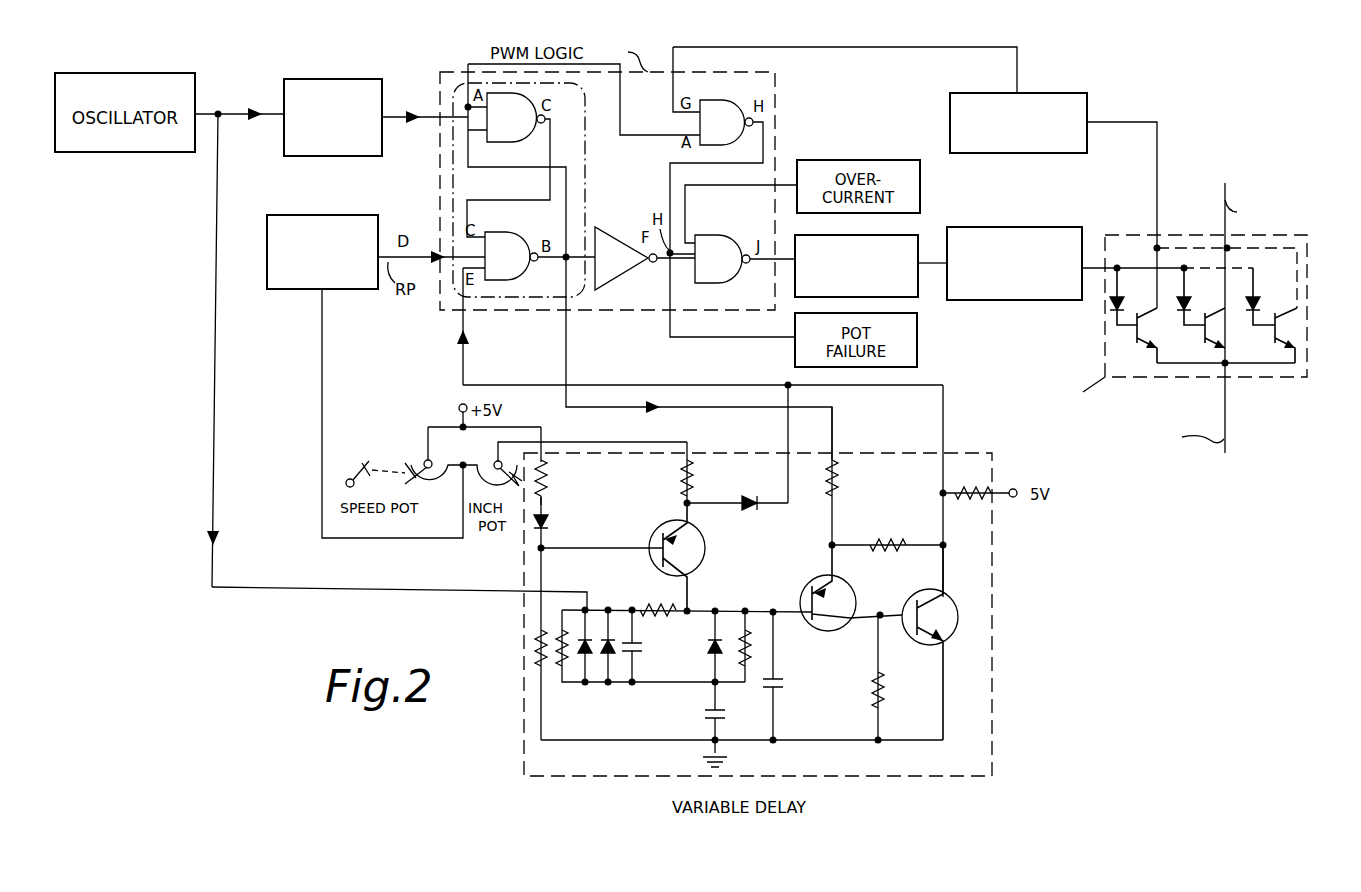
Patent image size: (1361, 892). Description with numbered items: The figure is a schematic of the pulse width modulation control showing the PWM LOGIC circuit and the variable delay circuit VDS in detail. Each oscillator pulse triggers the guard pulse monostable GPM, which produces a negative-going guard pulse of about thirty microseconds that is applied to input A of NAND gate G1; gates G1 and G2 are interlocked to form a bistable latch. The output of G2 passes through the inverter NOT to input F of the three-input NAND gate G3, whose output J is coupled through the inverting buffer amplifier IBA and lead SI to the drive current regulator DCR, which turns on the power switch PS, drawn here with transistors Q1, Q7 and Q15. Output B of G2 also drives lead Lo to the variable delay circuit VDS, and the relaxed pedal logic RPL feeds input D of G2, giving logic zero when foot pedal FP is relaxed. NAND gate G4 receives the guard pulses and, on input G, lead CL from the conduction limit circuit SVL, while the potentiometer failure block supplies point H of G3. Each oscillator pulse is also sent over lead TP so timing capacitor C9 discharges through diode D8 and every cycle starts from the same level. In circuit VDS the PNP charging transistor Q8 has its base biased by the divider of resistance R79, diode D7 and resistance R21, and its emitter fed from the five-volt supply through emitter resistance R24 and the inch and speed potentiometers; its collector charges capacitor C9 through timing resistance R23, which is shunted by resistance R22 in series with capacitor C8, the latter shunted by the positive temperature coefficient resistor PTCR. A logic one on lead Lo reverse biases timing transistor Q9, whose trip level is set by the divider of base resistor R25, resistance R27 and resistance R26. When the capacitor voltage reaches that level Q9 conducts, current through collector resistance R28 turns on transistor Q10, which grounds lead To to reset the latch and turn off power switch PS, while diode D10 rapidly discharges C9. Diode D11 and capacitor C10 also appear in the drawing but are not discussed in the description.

The guard pulse monostable multivibrator GPM is at (345, 79).
The relaxed pedal logic circuit RPL is at (334, 198).
The lead CL is at (824, 45).
The conduction limit circuit SVL is at (1072, 93).
The lead SI is at (935, 262).
The inverting buffer amplifier IBA is at (920, 300).
The drive current regulator DCR is at (1030, 303).
The power switch PS is at (1183, 318).
The power transistor Q1 is at (1133, 315).
The power transistor Q7 is at (1197, 315).
The power transistor Q15 is at (1267, 315).
The NAND logic gate G1 is at (516, 117).
The NAND logic gate G2 is at (511, 256).
The three-input NAND gate G3 is at (722, 259).
The NAND gate G4 is at (726, 122).
The NOT gate NOT is at (626, 258).
The lead TP is at (277, 591).
The lead To is at (463, 362).
The lead Lo is at (832, 428).
The foot pedal FP is at (372, 462).
The variable delay circuit VDS is at (992, 677).
The resistance R21 is at (550, 483).
The resistance R22 is at (663, 600).
The timing resistance R23 is at (740, 625).
The emitter resistance R24 is at (696, 472).
The base resistor R25 is at (840, 483).
The resistance R26 is at (965, 475).
The resistance R27 is at (886, 538).
The collector resistance R28 is at (886, 690).
The resistance R79 is at (533, 648).
The diode D7 is at (548, 530).
The diode D8 is at (590, 637).
The diode D10 is at (712, 641).
The diode D11 is at (757, 506).
The capacitor C8 is at (636, 652).
The timing capacitor C9 is at (726, 716).
The capacitor C10 is at (784, 680).
The charging current transistor Q8 is at (704, 556).
The timing transistor Q9 is at (850, 587).
The transistor Q10 is at (966, 588).
The positive temperature coefficient resistor PTCR is at (574, 670).